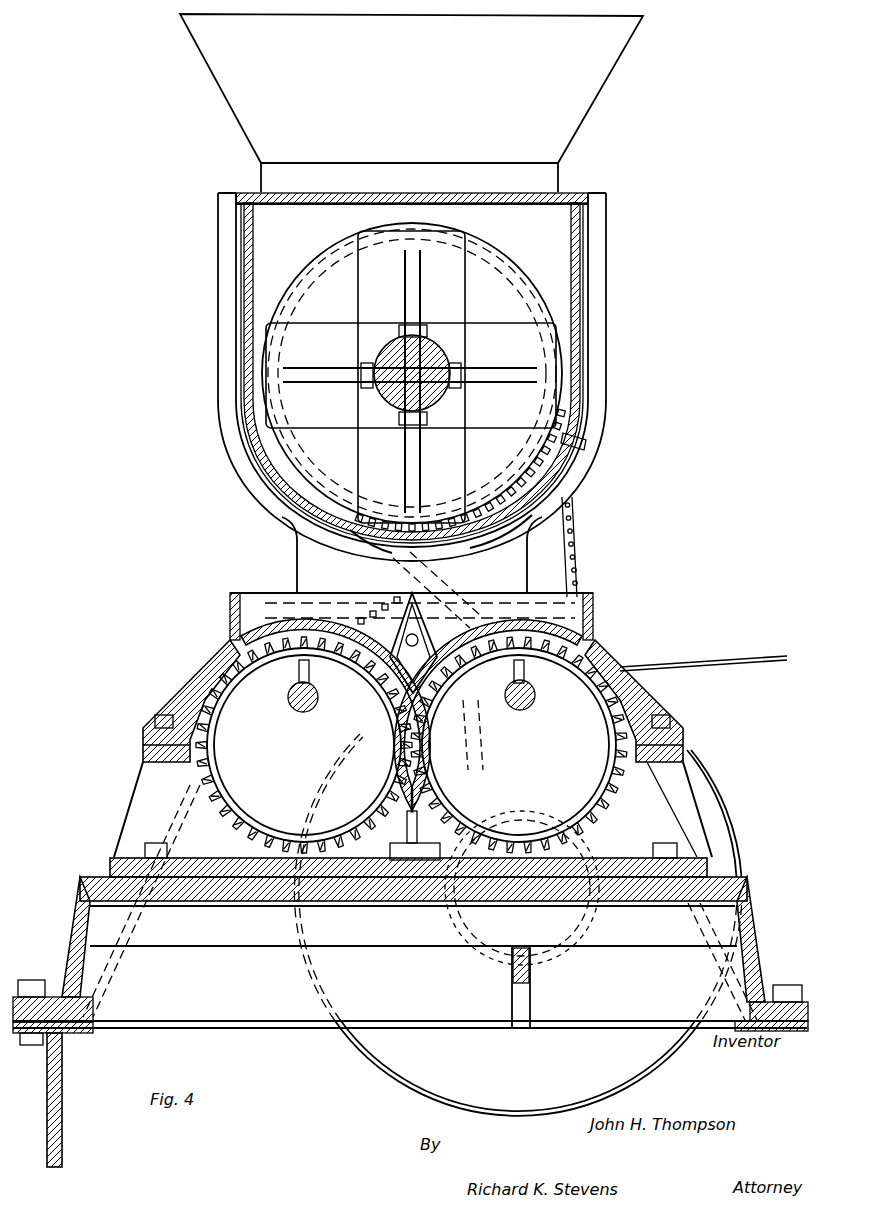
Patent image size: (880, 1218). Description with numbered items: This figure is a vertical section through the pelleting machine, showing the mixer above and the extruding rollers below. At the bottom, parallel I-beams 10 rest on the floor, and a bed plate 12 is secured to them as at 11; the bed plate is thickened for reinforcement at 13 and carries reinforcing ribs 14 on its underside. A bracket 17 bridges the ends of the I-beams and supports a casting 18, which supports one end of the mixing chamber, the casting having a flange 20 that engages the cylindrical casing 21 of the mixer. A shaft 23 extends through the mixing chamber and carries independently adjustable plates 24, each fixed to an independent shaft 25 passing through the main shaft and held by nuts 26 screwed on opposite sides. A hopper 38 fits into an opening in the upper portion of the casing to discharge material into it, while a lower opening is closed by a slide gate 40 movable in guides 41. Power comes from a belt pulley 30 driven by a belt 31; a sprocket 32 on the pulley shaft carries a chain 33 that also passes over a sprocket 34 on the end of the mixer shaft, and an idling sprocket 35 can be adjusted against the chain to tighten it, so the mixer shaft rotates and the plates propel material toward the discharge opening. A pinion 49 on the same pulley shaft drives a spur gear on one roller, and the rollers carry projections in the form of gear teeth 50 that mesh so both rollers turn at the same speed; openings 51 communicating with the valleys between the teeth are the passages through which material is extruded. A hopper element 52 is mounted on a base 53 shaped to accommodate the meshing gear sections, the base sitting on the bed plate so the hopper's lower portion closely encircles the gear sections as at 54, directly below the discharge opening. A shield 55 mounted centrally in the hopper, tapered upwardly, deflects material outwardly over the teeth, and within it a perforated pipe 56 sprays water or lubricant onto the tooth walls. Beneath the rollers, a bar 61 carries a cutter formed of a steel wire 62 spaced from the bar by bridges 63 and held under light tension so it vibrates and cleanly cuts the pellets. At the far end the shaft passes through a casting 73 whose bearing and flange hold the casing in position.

The I-beams 10 is at (62, 1053).
The fastening 11 is at (33, 980).
The bed plate 12 is at (750, 930).
The thickened portion 13 is at (110, 872).
The reinforcing ribs 14 is at (512, 987).
The bracket 17 is at (233, 713).
The casting 18 is at (600, 387).
The flange 20 is at (588, 363).
The cylindrical casing 21 is at (577, 410).
The shaft 23 is at (430, 398).
The adjustable plates 24 is at (492, 332).
The independent shafts 25 is at (407, 397).
The nuts 26 is at (423, 420).
The belt pulley 30 is at (733, 867).
The belt 31 is at (703, 654).
The sprocket 32 is at (411, 739).
The chain 33 is at (575, 547).
The sprocket 34 is at (577, 495).
The idling sprocket 35 is at (408, 592).
The hopper 38 is at (582, 97).
The slide gate 40 is at (563, 473).
The guides 41 is at (503, 540).
The pinion 49 is at (567, 923).
The gear teeth 50 is at (450, 777).
The openings 51 is at (603, 803).
The hopper element 52 is at (593, 627).
The base 53 is at (630, 797).
The encircling portion 54 is at (633, 652).
The shield 55 is at (430, 615).
The perforated pipe 56 is at (440, 640).
The bar 61 is at (531, 700).
The steel wire 62 is at (566, 641).
The bridges 63 is at (513, 698).
The casting 73 is at (413, 926).